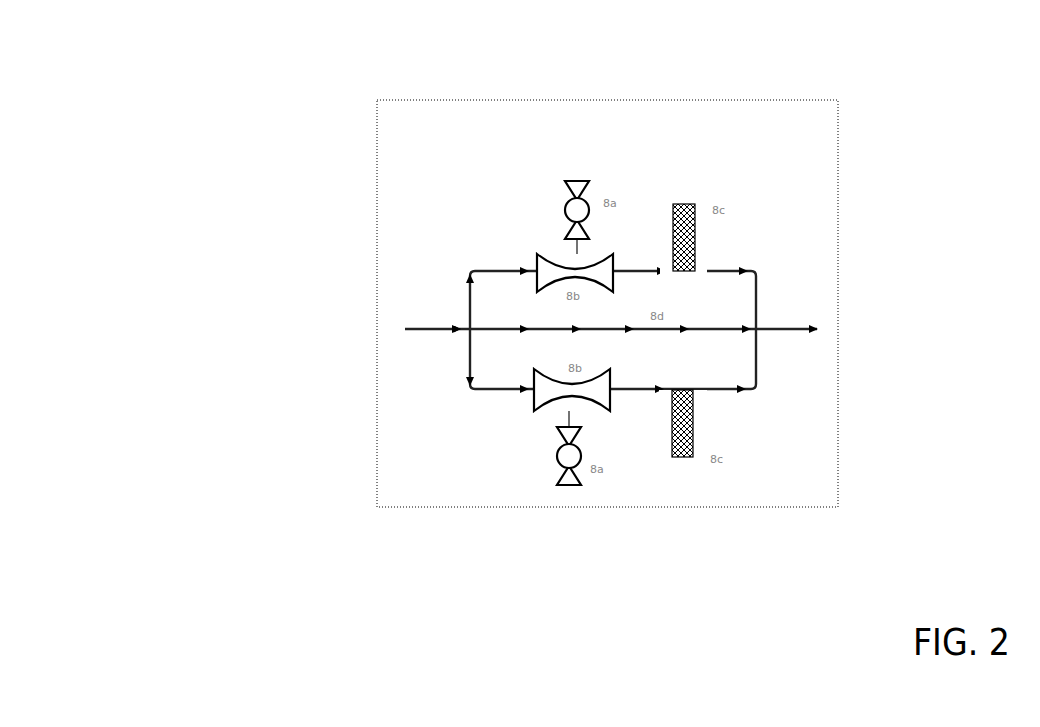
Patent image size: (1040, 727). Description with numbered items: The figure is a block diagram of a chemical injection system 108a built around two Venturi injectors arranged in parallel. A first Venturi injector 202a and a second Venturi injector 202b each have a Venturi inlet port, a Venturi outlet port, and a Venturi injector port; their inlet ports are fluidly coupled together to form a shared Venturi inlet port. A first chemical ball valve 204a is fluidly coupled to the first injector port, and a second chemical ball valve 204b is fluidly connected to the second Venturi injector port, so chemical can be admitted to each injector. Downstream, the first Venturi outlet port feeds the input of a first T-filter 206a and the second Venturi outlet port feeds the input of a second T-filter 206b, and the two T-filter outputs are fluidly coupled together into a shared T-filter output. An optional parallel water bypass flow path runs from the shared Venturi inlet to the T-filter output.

The chemical injection system 108a is at (109, 131).
The first Venturi injector 202a is at (540, 257).
The second Venturi injector 202b is at (542, 397).
The first chemical ball valve 204a is at (566, 197).
The second chemical ball valve 204b is at (527, 459).
The first T-filter 206a is at (670, 204).
The second T-filter 206b is at (672, 468).